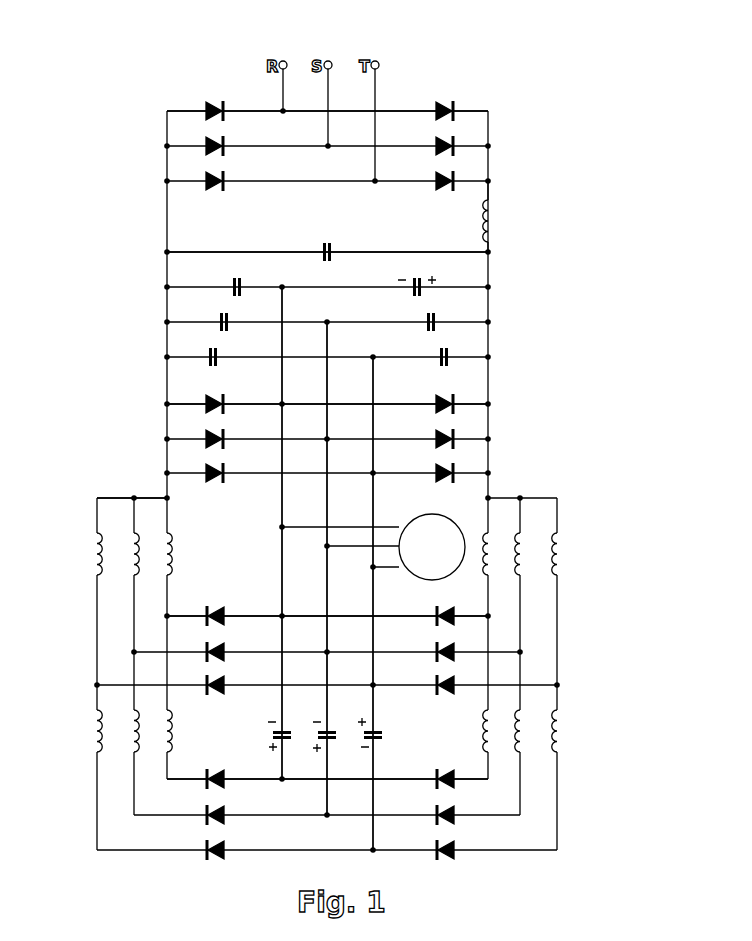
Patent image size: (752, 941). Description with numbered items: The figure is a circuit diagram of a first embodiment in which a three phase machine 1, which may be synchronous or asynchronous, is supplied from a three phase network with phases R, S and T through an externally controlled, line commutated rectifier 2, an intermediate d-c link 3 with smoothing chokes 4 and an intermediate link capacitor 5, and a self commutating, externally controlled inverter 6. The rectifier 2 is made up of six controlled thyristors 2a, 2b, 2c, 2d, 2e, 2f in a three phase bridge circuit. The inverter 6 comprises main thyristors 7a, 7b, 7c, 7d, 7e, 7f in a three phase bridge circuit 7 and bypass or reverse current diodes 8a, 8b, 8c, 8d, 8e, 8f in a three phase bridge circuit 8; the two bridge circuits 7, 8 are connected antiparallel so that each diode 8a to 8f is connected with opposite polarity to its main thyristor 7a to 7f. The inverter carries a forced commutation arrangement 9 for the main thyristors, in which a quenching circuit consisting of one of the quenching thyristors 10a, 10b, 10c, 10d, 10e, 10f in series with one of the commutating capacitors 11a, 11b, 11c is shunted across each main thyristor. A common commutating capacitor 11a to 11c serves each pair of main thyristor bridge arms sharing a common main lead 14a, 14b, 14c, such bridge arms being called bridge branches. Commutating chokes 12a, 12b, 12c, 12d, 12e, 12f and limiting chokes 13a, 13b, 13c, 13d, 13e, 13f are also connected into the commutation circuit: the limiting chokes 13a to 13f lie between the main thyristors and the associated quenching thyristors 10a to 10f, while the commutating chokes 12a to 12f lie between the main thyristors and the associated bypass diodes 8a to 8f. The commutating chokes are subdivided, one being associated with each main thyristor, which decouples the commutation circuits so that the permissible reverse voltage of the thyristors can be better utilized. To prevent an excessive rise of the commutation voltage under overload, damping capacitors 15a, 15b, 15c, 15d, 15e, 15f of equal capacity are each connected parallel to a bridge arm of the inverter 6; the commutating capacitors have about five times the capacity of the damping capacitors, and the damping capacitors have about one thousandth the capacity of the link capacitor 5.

The three phase machine 1 is at (412, 576).
The line commutated rectifier 2 is at (357, 140).
The controlled thyristor 2a is at (222, 115).
The controlled thyristor 2b is at (222, 150).
The controlled thyristor 2c is at (222, 185).
The controlled thyristor 2d is at (437, 116).
The controlled thyristor 2e is at (437, 151).
The controlled thyristor 2f is at (437, 186).
The intermediate d-c link 3 is at (336, 223).
The smoothing choke 4 is at (494, 210).
The intermediate link capacitor 5 is at (334, 259).
The self commutating inverter 6 is at (258, 558).
The three phase bridge circuit 7 is at (352, 645).
The main thyristor 7a is at (222, 620).
The main thyristor 7b is at (222, 656).
The main thyristor 7c is at (222, 689).
The main thyristor 7d is at (437, 621).
The main thyristor 7e is at (437, 656).
The main thyristor 7f is at (437, 690).
The three phase bridge circuit 8 is at (311, 434).
The bypass diode 8a is at (222, 408).
The bypass diode 8b is at (222, 443).
The bypass diode 8c is at (222, 477).
The bypass diode 8d is at (437, 410).
The bypass diode 8e is at (437, 445).
The bypass diode 8f is at (437, 480).
The forced commutation arrangement 9 is at (352, 810).
The quenching thyristor 10a is at (222, 783).
The quenching thyristor 10b is at (222, 819).
The quenching thyristor 10c is at (222, 854).
The quenching thyristor 10d is at (452, 786).
The quenching thyristor 10e is at (452, 822).
The quenching thyristor 10f is at (452, 857).
The commutating capacitor 11a is at (287, 730).
The commutating capacitor 11b is at (331, 742).
The commutating capacitor 11c is at (378, 742).
The commutating choke 12a is at (172, 552).
The commutating choke 12b is at (128, 550).
The commutating choke 12c is at (90, 547).
The commutating choke 12d is at (483, 560).
The commutating choke 12e is at (526, 548).
The commutating choke 12f is at (561, 548).
The limiting choke 13a is at (170, 743).
The limiting choke 13b is at (124, 725).
The limiting choke 13c is at (92, 740).
The limiting choke 13d is at (482, 730).
The limiting choke 13e is at (523, 722).
The limiting choke 13f is at (561, 746).
The main lead 14a is at (284, 403).
The main lead 14b is at (328, 438).
The main lead 14c is at (371, 476).
The damping capacitor 15a is at (242, 280).
The damping capacitor 15b is at (235, 315).
The damping capacitor 15c is at (224, 351).
The damping capacitor 15d is at (412, 292).
The damping capacitor 15e is at (426, 328).
The damping capacitor 15f is at (438, 363).